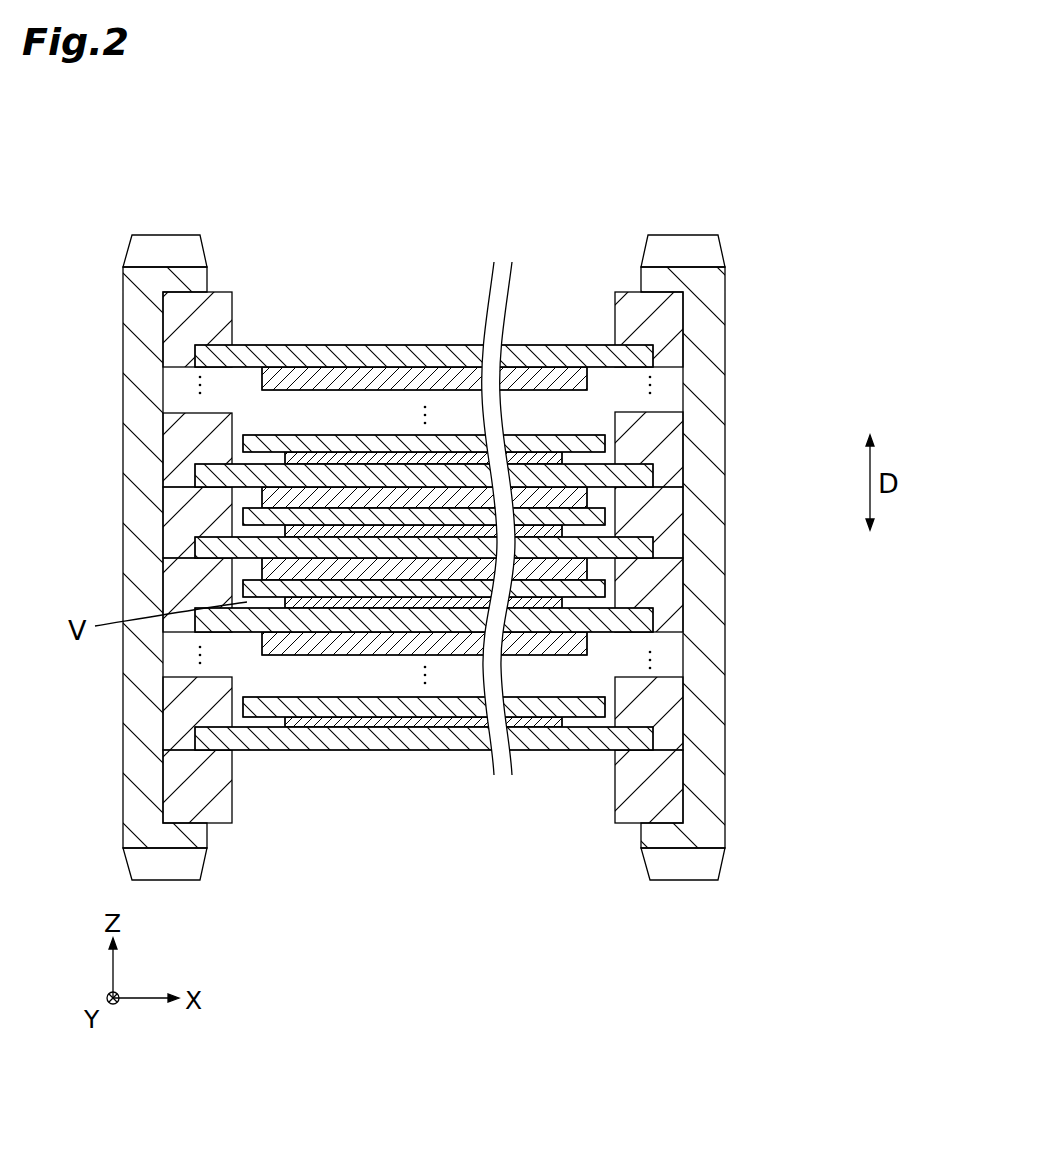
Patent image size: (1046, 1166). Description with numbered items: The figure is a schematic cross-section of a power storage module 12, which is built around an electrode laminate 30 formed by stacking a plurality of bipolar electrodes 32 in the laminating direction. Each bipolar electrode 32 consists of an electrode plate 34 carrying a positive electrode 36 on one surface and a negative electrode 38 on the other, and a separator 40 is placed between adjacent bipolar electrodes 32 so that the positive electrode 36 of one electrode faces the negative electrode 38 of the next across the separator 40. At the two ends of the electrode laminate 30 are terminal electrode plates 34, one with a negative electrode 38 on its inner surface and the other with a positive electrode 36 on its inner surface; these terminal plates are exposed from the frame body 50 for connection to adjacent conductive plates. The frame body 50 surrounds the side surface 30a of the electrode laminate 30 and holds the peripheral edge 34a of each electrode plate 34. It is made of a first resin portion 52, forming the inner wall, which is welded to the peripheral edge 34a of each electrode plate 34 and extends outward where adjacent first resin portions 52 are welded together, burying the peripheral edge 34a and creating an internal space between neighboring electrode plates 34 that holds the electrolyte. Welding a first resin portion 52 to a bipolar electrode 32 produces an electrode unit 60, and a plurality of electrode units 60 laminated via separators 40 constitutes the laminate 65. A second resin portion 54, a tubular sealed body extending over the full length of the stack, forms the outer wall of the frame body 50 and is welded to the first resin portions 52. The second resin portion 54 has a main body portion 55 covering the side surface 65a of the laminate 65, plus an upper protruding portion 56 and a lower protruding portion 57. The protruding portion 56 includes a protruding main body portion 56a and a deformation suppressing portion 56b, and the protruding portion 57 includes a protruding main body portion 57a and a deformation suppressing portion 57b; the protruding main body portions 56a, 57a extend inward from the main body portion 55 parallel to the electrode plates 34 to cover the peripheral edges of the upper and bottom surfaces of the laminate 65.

The power storage module 12 is at (637, 205).
The electrode laminate 30 is at (589, 877).
The side surface 30a is at (667, 824).
The bipolar electrode 32 is at (796, 470).
The electrode plate 34 is at (652, 356).
The peripheral edge 34a is at (653, 476).
The positive electrode 36 is at (608, 526).
The negative electrode 38 is at (592, 376).
The separator 40 is at (236, 428).
The frame body 50 is at (62, 283).
The first resin portion 52 is at (180, 321).
The second resin portion 54 is at (138, 303).
The main body portion 55 is at (136, 372).
The protruding portion 56 is at (424, 238).
The protruding main body portion 56a is at (200, 287).
The deformation suppressing portion 56b is at (196, 252).
The protruding portion 57 is at (424, 907).
The protruding main body portion 57a is at (200, 834).
The deformation suppressing portion 57b is at (176, 873).
The electrode unit 60 is at (861, 555).
The laminate 65 is at (690, 314).
The side surface 65a is at (178, 326).